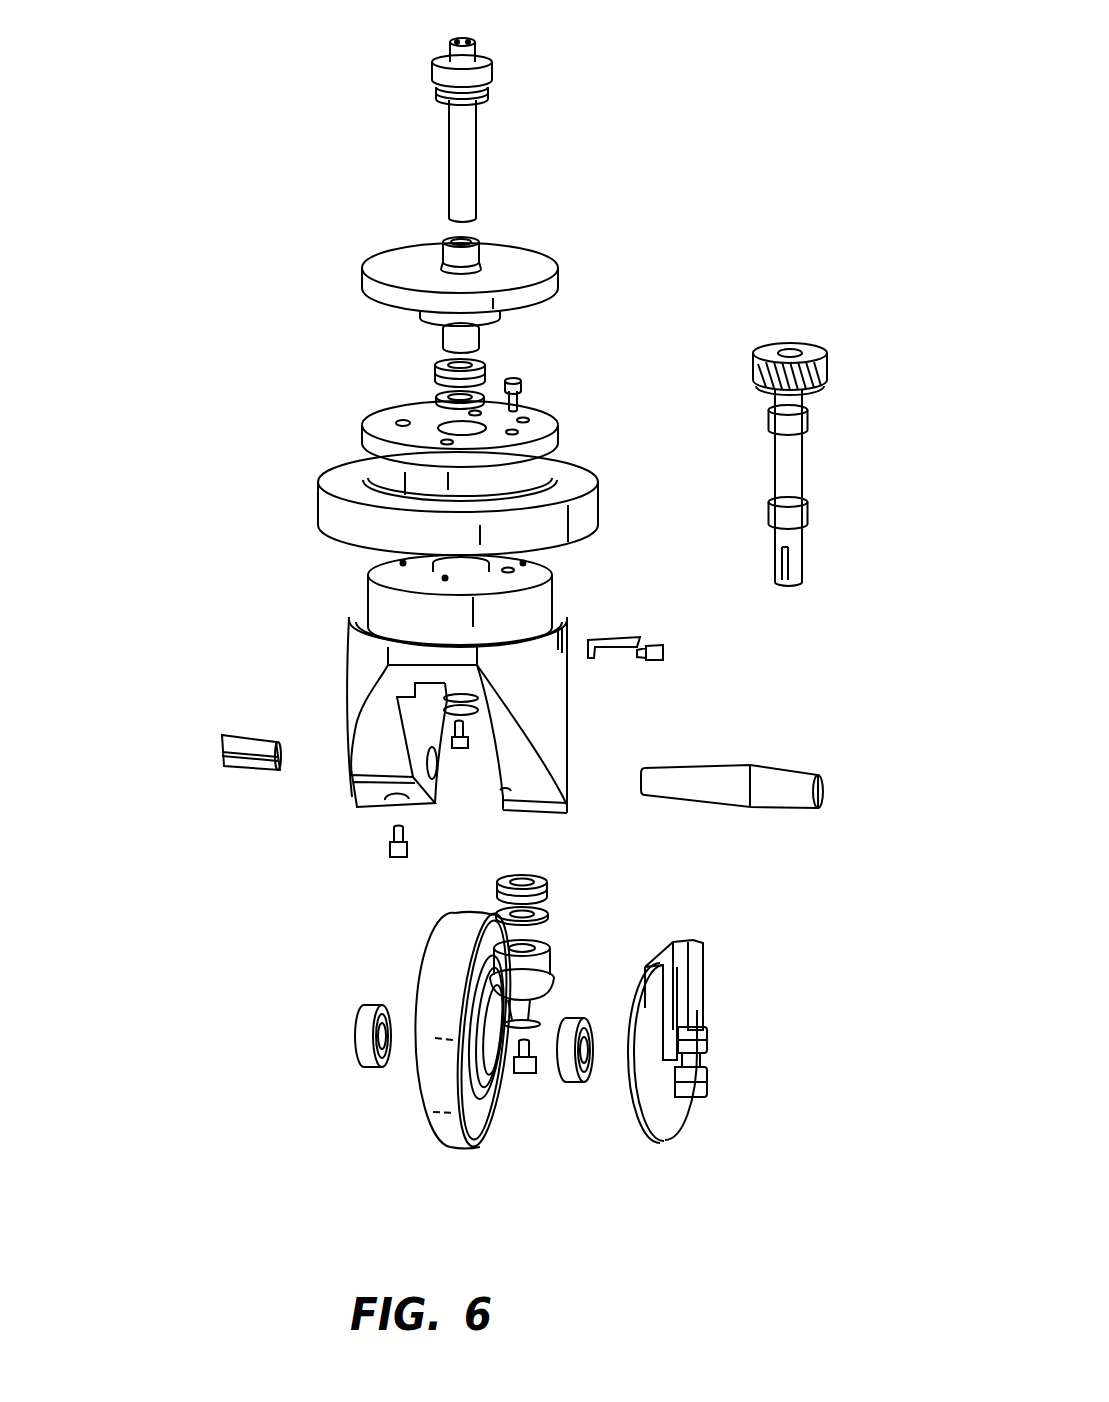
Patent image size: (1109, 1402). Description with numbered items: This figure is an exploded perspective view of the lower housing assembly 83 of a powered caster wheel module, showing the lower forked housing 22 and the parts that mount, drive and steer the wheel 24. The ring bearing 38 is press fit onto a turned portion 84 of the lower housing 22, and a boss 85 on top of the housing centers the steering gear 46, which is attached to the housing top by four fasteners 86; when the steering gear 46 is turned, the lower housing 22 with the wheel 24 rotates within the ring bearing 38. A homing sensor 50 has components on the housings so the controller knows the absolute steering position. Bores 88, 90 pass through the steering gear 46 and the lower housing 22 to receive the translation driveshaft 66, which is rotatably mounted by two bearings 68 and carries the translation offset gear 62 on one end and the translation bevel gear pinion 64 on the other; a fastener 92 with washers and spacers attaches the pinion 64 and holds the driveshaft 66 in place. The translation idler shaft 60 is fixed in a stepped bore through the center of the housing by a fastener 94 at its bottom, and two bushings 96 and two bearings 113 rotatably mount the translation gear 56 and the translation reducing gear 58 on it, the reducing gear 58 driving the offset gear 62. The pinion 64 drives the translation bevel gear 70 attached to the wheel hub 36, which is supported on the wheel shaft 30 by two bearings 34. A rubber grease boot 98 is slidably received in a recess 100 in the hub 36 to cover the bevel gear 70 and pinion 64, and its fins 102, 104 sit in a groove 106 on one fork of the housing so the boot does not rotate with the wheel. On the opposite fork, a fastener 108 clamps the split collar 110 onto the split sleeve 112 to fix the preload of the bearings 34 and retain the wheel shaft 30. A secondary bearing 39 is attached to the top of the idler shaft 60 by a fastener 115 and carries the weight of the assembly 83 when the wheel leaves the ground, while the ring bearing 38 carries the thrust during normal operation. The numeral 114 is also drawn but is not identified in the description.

The lower forked housing 22 is at (360, 665).
The wheel 24 is at (386, 1154).
The wheel shaft 30 is at (790, 780).
The bearings 34 is at (368, 1065).
The wheel hub 36 is at (418, 990).
The ring bearing 38 is at (328, 507).
The secondary bearing 39 is at (485, 73).
The steering gear 46 is at (366, 440).
The homing sensor 50 is at (637, 678).
The translation gear 56 is at (370, 288).
The translation reducing gear 58 is at (430, 316).
The translation idler shaft 60 is at (455, 155).
The translation offset gear 62 is at (823, 366).
The translation bevel gear pinion 64 is at (545, 960).
The translation driveshaft 66 is at (800, 465).
The bearings 68 is at (805, 424).
The translation bevel gear 70 is at (508, 1120).
The lower housing assembly 83 is at (795, 144).
The turned portion 84 is at (375, 600).
The boss 85 is at (370, 568).
The fasteners 86 is at (522, 386).
The bore 88 is at (555, 415).
The bore 90 is at (560, 566).
The fastener 92 is at (530, 1075).
The fastener 94 is at (460, 752).
The bushings 96 is at (487, 250).
The rubber grease boot 98 is at (660, 1125).
The recess 100 is at (515, 1110).
The fin 102 is at (708, 1040).
The fin 104 is at (708, 1080).
The groove 106 is at (502, 797).
The fastener 108 is at (392, 862).
The split collar 110 is at (362, 800).
The split sleeve 112 is at (246, 776).
The bearings 113 is at (437, 93).
The rim 114 is at (452, 1133).
The fastener 115 is at (448, 44).